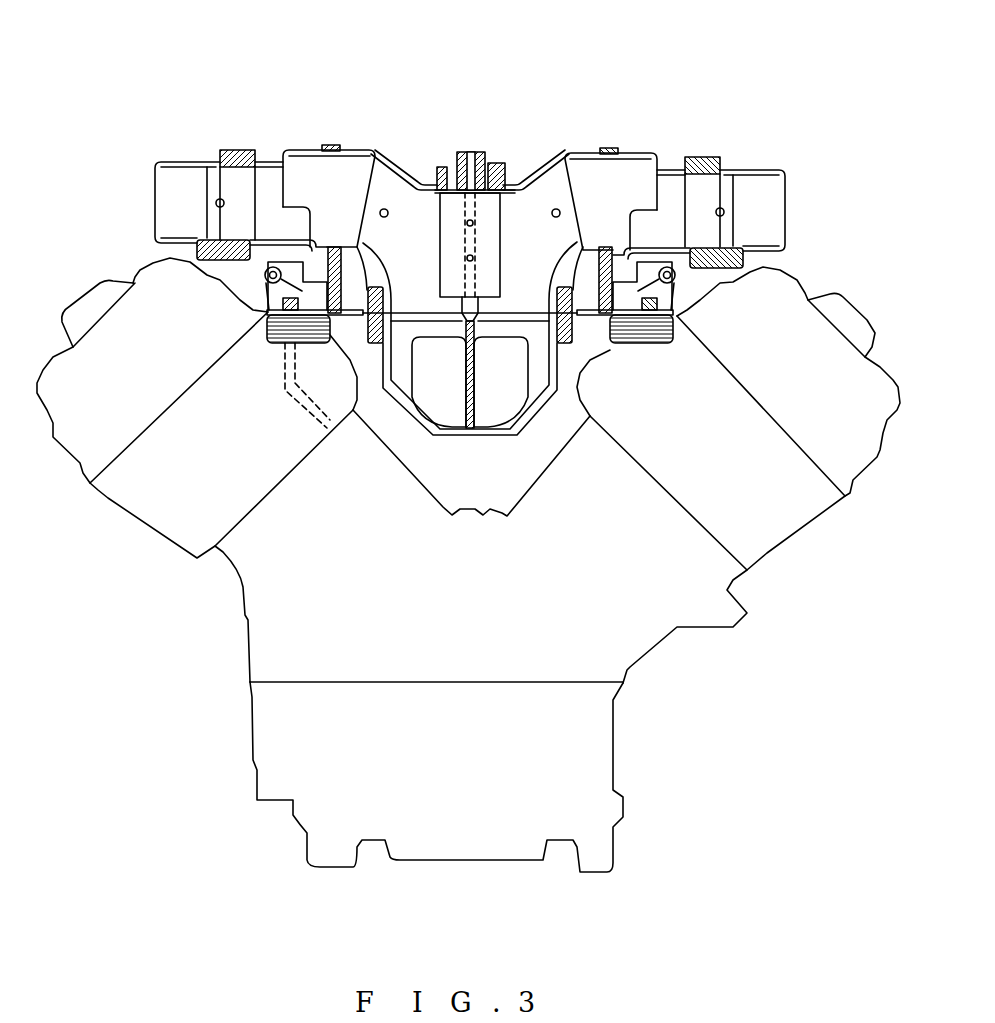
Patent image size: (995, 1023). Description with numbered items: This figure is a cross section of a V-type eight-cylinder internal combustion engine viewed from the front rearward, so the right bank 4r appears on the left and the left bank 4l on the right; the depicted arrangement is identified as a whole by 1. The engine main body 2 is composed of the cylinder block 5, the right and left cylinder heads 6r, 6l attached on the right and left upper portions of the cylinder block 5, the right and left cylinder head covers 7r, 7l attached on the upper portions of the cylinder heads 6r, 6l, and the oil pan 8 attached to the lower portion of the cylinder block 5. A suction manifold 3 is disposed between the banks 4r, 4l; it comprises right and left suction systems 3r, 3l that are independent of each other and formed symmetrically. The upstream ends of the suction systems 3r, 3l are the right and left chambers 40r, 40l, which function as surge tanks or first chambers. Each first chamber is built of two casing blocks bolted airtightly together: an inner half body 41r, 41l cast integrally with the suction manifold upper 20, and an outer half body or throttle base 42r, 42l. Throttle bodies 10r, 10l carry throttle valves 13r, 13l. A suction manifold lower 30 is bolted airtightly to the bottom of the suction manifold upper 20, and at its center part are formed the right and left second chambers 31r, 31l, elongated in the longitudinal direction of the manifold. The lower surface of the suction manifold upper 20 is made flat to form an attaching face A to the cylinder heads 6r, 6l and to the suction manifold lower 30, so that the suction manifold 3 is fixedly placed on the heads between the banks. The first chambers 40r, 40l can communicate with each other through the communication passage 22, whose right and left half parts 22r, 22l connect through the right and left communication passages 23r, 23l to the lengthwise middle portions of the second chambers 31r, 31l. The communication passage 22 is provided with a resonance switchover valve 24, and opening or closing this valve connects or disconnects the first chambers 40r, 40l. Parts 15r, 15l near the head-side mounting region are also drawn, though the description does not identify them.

The intake system of V-type engine 1 is at (744, 83).
The main body 2 is at (223, 642).
The suction manifold 3 is at (481, 128).
The right suction system 3r is at (401, 143).
The left suction system 3l is at (536, 150).
The right bank 4r is at (81, 268).
The left bank 4l is at (852, 281).
The cylinder block 5 is at (663, 643).
The right cylinder head 6r is at (150, 530).
The left cylinder head 6l is at (800, 537).
The right cylinder head cover 7r is at (73, 467).
The left cylinder head cover 7l is at (877, 467).
The oil pan 8 is at (613, 743).
The throttle body 10r is at (180, 162).
The throttle body 10l is at (768, 170).
The throttle valve 13r is at (216, 197).
The throttle valve 13l is at (723, 208).
The right mounting bracket 15r is at (314, 312).
The left mounting bracket 15l is at (625, 345).
The suction manifold upper 20 is at (423, 171).
The communication passage 22 is at (402, 217).
The right half part of communication passage 22r is at (386, 251).
The left half part of communication passage 22l is at (547, 251).
The right communication passage 23r is at (390, 301).
The left communication passage 23l is at (547, 301).
The resonance switchover valve 24 is at (493, 218).
The suction manifold lower 30 is at (505, 442).
The right second chamber 31r is at (460, 397).
The left second chamber 31l is at (535, 397).
The right chamber 40r is at (333, 139).
The left chamber 40l is at (623, 137).
The inner half body 41r is at (360, 150).
The inner half body 41l is at (586, 150).
The outer half body 42r is at (298, 150).
The outer half body 42l is at (642, 155).
The attaching face A is at (568, 335).